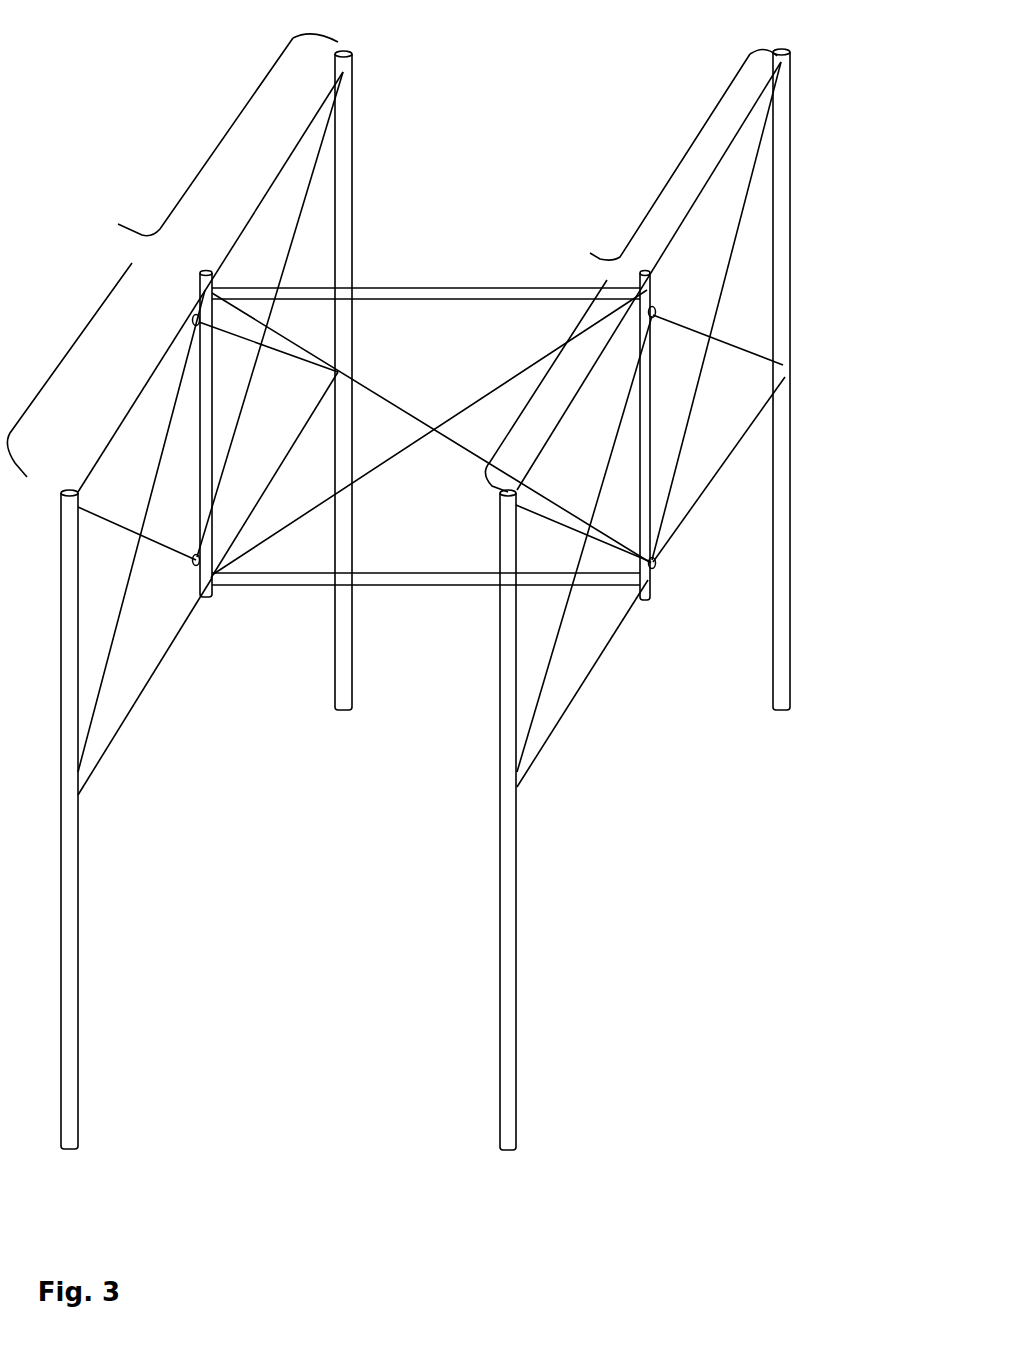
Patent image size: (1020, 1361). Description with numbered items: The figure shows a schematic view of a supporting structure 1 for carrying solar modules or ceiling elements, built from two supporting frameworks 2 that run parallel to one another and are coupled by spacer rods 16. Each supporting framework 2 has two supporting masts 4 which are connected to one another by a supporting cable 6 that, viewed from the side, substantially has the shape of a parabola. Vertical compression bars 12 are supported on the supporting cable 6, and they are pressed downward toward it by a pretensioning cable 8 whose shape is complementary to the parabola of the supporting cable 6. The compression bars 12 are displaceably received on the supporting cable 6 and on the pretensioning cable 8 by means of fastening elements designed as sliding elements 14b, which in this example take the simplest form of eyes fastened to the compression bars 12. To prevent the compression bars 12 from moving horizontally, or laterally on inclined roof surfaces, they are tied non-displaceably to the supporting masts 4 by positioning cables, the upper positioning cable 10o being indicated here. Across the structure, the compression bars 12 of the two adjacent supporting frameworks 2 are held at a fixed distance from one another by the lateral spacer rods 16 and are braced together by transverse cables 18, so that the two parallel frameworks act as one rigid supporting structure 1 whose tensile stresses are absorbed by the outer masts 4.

The supporting structure 1 is at (124, 100).
The supporting framework 2 is at (132, 263).
The supporting mast 4 is at (352, 185).
The supporting cable 6 is at (672, 482).
The pretensioning cable 8 is at (667, 300).
The upper positioning cable 10o is at (687, 212).
The compression bar 12 is at (645, 495).
The sliding elements 14b is at (652, 283).
The spacer rods 16 is at (465, 580).
The transverse cable 18 is at (372, 477).